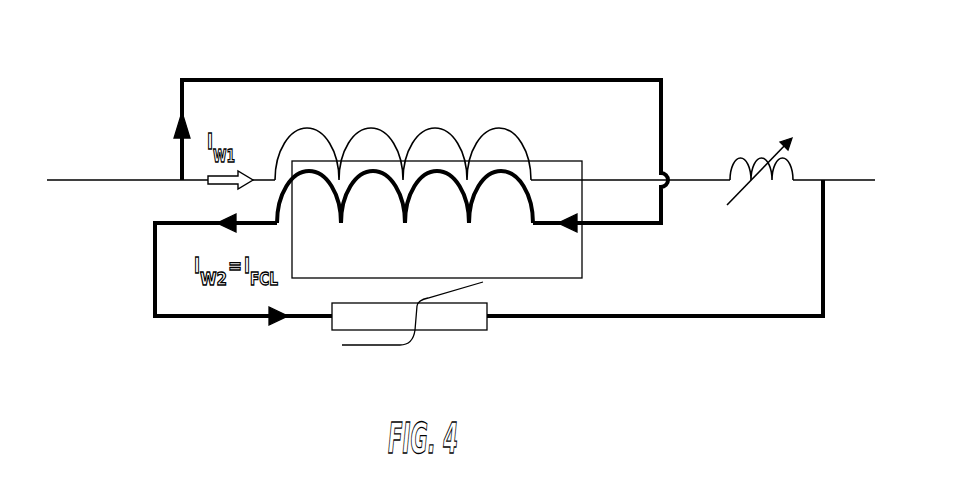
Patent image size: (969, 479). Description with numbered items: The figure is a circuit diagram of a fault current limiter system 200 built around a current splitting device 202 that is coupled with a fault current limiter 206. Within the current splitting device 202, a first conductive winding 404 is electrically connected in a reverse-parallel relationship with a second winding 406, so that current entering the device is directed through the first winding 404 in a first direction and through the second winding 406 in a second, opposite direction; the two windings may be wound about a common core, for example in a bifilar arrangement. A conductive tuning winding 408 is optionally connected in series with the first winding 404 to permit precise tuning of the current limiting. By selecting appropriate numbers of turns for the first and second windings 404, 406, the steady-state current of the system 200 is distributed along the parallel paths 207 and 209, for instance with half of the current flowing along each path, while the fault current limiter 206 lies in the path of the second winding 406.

The fault current limiter system 200 is at (173, 69).
The current splitting device 202 is at (455, 155).
The fault current limiter 206 is at (454, 331).
The first parallel path 207 is at (179, 102).
The second parallel path 209 is at (202, 183).
The first conductive winding 404 is at (308, 128).
The second winding 406 is at (300, 168).
The conductive tuning winding 408 is at (796, 160).